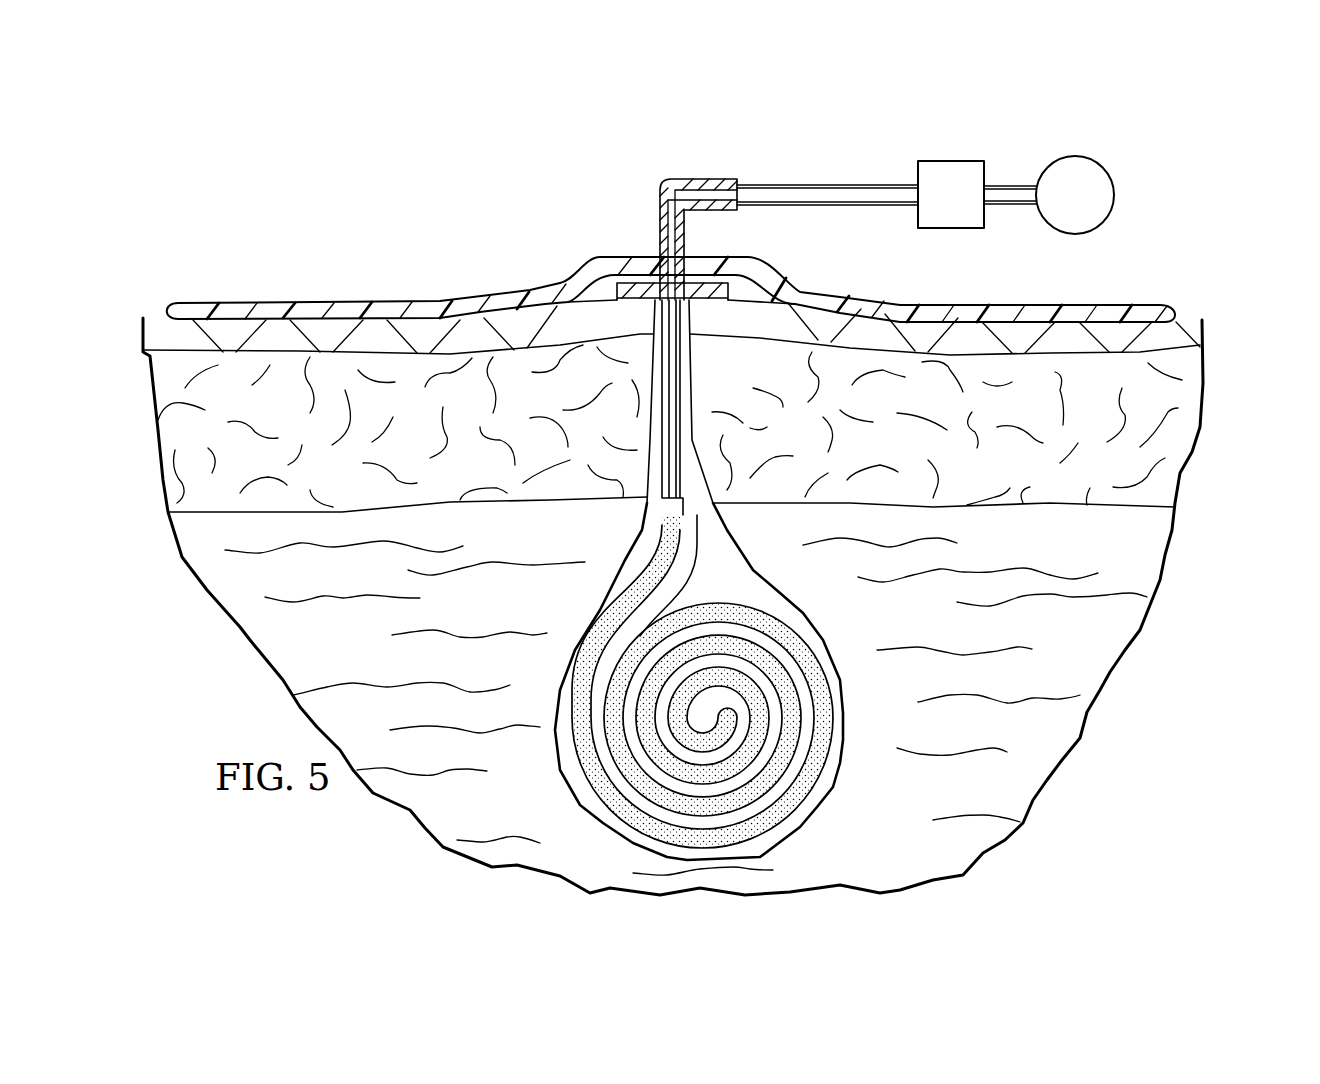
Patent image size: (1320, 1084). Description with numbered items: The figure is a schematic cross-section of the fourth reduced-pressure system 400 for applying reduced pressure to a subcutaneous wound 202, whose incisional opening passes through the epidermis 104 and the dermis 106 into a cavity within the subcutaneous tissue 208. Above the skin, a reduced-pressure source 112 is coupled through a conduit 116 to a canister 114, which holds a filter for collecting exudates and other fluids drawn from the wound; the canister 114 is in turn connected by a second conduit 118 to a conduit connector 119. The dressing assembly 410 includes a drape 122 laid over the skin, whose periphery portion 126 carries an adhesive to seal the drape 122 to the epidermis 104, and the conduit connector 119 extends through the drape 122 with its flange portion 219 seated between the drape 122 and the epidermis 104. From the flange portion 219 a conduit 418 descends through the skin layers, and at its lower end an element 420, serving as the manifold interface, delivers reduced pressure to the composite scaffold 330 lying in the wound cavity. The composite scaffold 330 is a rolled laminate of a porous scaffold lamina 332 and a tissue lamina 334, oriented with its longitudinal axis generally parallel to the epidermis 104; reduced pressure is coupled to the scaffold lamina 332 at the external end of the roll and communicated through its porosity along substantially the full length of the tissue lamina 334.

The reduced-pressure system 400 is at (366, 150).
The dressing assembly 410 is at (466, 208).
The conduit connector 119 is at (663, 183).
The second conduit 118 is at (856, 185).
The canister 114 is at (948, 162).
The conduit 116 is at (1010, 186).
The reduced-pressure source 112 is at (1075, 157).
The periphery portion 126 is at (192, 303).
The drape 122 is at (428, 302).
The flange portion 219 is at (603, 290).
The epidermis 104 is at (1205, 326).
The dermis 106 is at (1200, 392).
The tissue channel 418 is at (698, 350).
The tissue pocket 420 is at (724, 512).
The subcutaneous tissue 208 is at (1120, 648).
The composite scaffold 330 is at (586, 795).
The scaffold lamina 332 is at (632, 818).
The tissue lamina 334 is at (800, 785).
The subcutaneous wound 202 is at (790, 832).